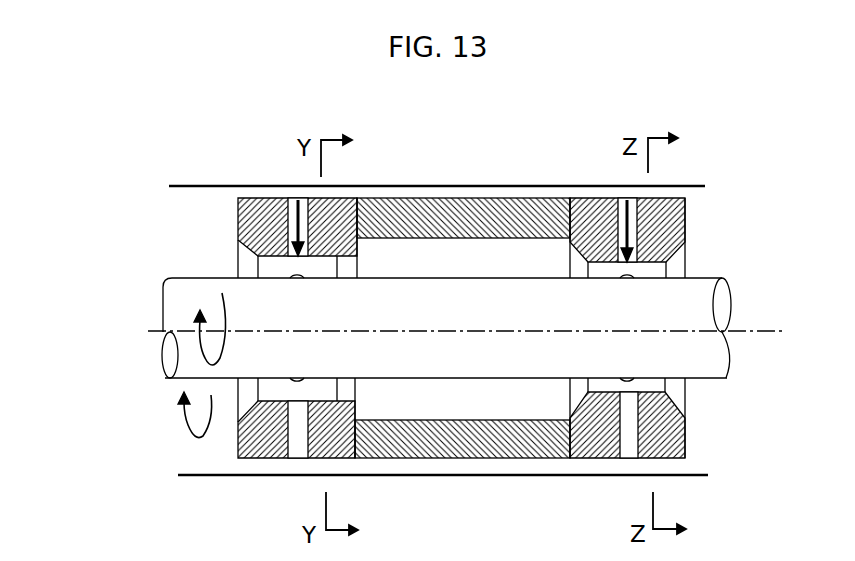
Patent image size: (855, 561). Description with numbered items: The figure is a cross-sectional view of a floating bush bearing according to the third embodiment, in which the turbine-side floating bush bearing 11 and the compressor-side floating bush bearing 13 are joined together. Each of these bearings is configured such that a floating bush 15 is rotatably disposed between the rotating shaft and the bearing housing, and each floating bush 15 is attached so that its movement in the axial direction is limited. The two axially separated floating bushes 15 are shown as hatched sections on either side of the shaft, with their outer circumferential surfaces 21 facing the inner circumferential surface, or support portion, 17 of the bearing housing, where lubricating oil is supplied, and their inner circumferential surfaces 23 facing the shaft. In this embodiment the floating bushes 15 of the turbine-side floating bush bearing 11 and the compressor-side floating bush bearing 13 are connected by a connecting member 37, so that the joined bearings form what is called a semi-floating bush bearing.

The turbine-side floating bush bearing 11 is at (712, 428).
The compressor-side floating bush bearing 13 is at (225, 443).
The floating bush 15 is at (468, 295).
The inner circumferential surface (support portion) 17 is at (450, 189).
The outer circumferential surface 21 is at (262, 198).
The inner circumferential surface 23 is at (256, 262).
The connecting member 37 is at (500, 197).